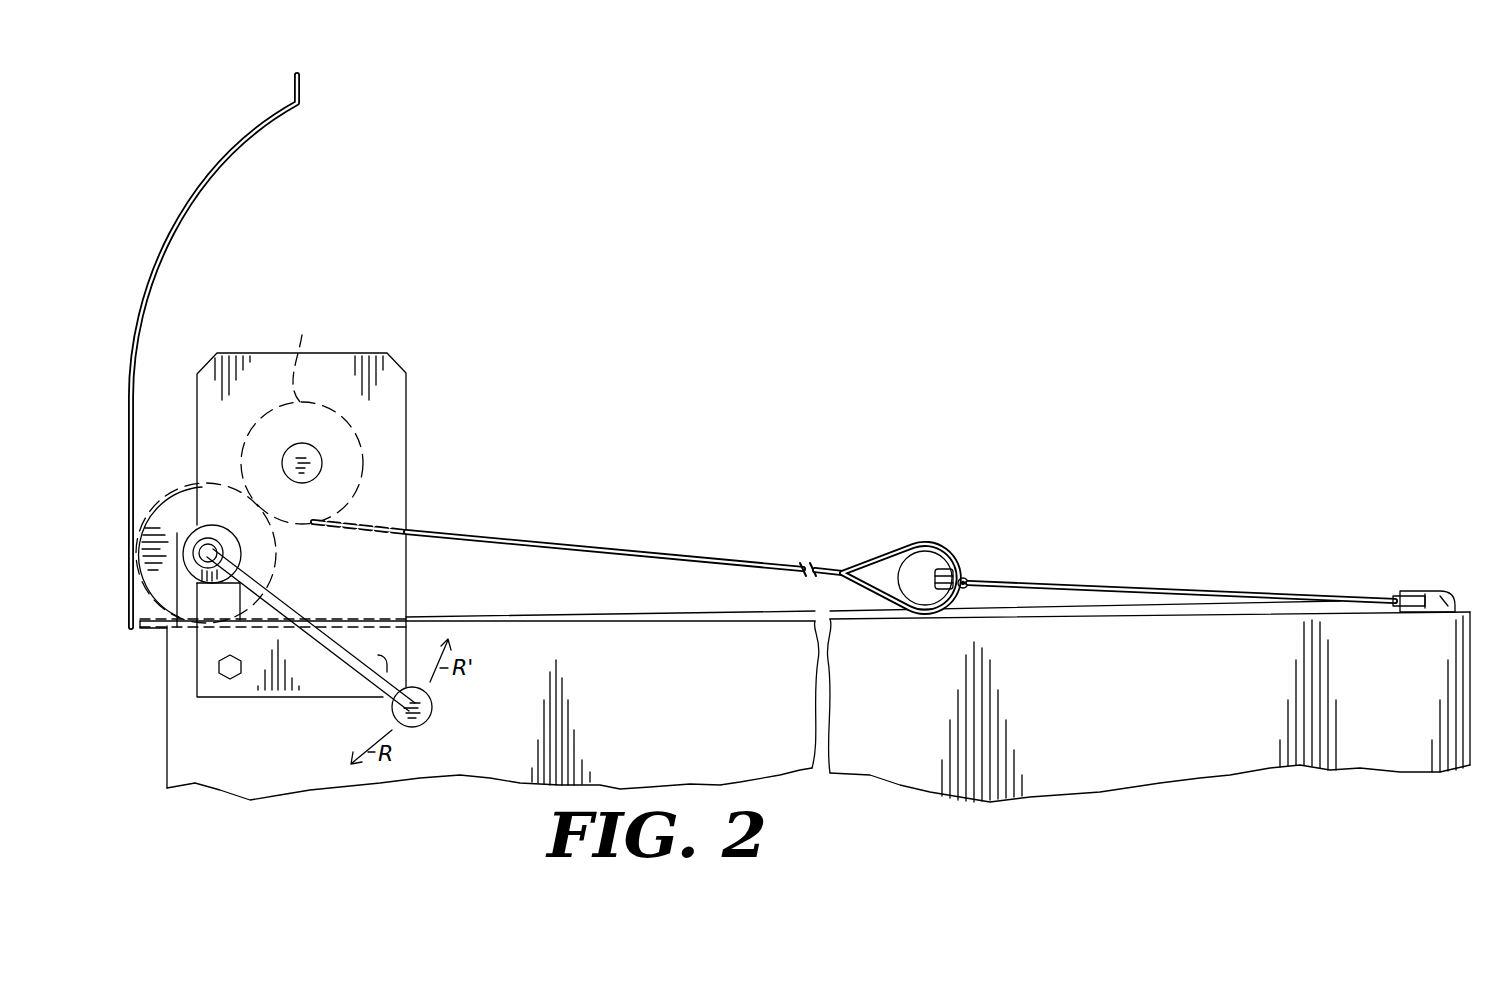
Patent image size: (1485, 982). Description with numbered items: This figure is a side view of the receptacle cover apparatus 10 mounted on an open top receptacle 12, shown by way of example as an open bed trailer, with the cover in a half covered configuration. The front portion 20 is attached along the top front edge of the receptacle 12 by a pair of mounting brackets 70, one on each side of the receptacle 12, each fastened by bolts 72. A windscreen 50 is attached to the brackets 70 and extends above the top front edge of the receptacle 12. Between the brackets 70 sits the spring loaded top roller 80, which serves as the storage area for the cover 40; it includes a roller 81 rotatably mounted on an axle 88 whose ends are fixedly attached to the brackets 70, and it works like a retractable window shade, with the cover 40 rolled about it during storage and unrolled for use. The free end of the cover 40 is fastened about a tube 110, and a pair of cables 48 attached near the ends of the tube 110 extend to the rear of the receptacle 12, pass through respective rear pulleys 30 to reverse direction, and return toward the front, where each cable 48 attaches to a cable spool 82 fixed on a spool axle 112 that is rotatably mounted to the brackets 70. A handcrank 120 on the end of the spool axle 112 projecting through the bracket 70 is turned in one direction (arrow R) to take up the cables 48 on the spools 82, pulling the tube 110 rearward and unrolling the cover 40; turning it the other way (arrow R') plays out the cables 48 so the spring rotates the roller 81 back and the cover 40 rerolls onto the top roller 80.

The receptacle cover apparatus 10 is at (875, 92).
The open top receptacle 12 is at (1108, 691).
The front portion 20 is at (450, 131).
The rear pulley 30 is at (1410, 592).
The cover 40 is at (640, 549).
The cable 48 is at (1060, 580).
The windscreen 50 is at (268, 120).
The mounting bracket 70 is at (388, 483).
The bolt 72 is at (230, 679).
The spring loaded top roller 80 is at (330, 385).
The roller 81 is at (303, 345).
The cable spool 82 is at (161, 628).
The axle 88 is at (314, 457).
The tube 110 is at (915, 553).
The spool axle 112 is at (189, 545).
The handcrank 120 is at (430, 710).